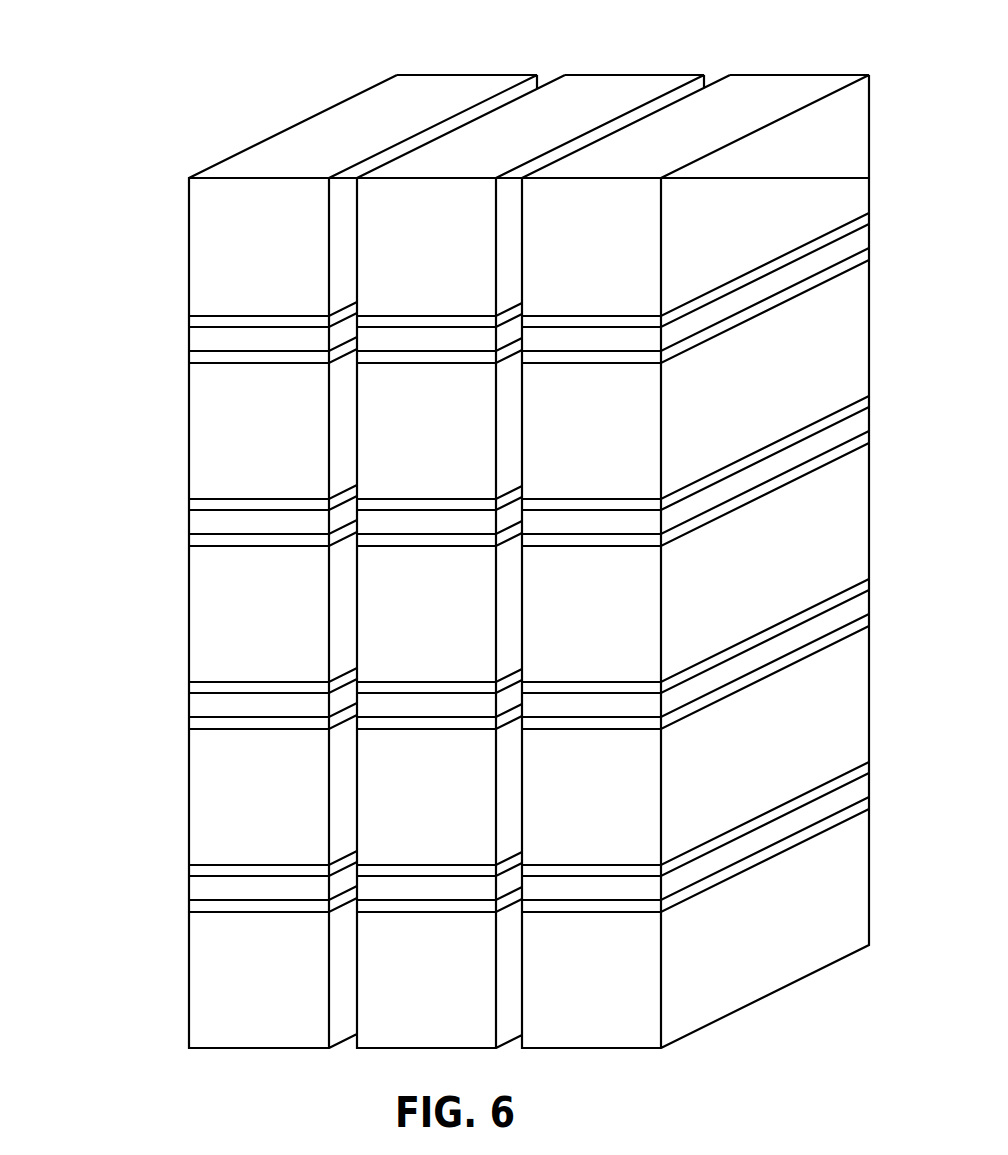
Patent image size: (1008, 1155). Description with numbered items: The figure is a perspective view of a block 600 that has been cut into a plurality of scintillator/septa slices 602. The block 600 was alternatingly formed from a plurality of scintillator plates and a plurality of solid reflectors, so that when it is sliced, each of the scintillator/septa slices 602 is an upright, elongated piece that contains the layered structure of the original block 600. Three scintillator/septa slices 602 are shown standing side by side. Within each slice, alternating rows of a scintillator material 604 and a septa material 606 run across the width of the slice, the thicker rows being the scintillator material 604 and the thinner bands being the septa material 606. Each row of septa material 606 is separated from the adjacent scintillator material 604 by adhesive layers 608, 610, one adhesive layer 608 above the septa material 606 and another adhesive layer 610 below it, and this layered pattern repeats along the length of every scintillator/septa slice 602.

The block 600 is at (177, 116).
The scintillator/septa slices 602 is at (385, 113).
The scintillator material 604 is at (212, 215).
The septa material 606 is at (203, 334).
The adhesive layer 608 is at (202, 318).
The adhesive layer 610 is at (218, 355).